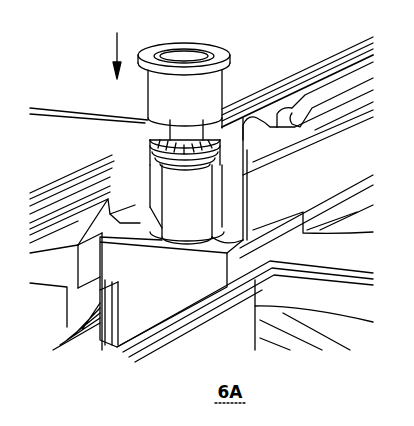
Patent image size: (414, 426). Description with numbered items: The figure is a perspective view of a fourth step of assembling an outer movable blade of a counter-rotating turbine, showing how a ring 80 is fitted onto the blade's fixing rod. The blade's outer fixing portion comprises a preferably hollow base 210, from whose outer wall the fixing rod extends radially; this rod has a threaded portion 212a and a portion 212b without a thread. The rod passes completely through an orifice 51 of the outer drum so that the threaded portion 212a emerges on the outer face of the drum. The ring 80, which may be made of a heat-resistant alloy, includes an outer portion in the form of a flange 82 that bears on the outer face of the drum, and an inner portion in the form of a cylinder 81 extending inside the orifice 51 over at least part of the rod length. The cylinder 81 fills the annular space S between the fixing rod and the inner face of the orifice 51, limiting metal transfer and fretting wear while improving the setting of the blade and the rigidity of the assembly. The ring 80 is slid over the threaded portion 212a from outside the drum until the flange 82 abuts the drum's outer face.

The ring 80 is at (235, 72).
The cylinder 81 is at (149, 97).
The flange 82 is at (184, 43).
The orifice 51 is at (155, 147).
The base 210 is at (138, 298).
The threaded portion 212a is at (172, 129).
The non-threaded portion 212b is at (200, 198).
The annular space S is at (228, 130).